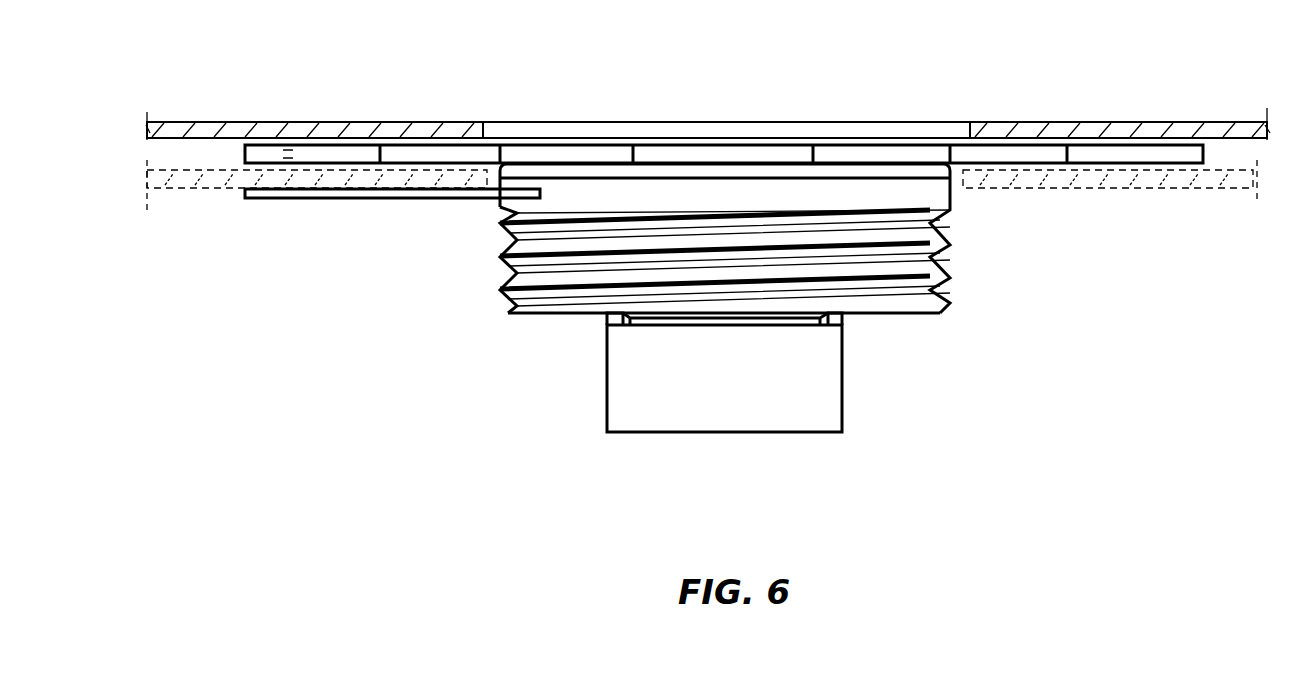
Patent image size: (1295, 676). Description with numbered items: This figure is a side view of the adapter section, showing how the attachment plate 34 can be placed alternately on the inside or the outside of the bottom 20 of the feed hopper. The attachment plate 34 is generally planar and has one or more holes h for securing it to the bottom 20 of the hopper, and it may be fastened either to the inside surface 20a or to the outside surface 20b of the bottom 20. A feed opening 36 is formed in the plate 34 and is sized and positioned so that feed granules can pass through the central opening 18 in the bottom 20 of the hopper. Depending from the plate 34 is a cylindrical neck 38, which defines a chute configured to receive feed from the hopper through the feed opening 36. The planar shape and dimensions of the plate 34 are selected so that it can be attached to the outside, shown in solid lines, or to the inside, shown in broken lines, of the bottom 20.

The central opening 18 is at (487, 128).
The bottom 20 is at (1062, 122).
The inside surface 20a is at (189, 122).
The outside surface 20b is at (205, 188).
The attachment plate 34 is at (1110, 155).
The feed opening 36 is at (812, 155).
The cylindrical neck 38 is at (950, 267).
The holes h is at (288, 152).